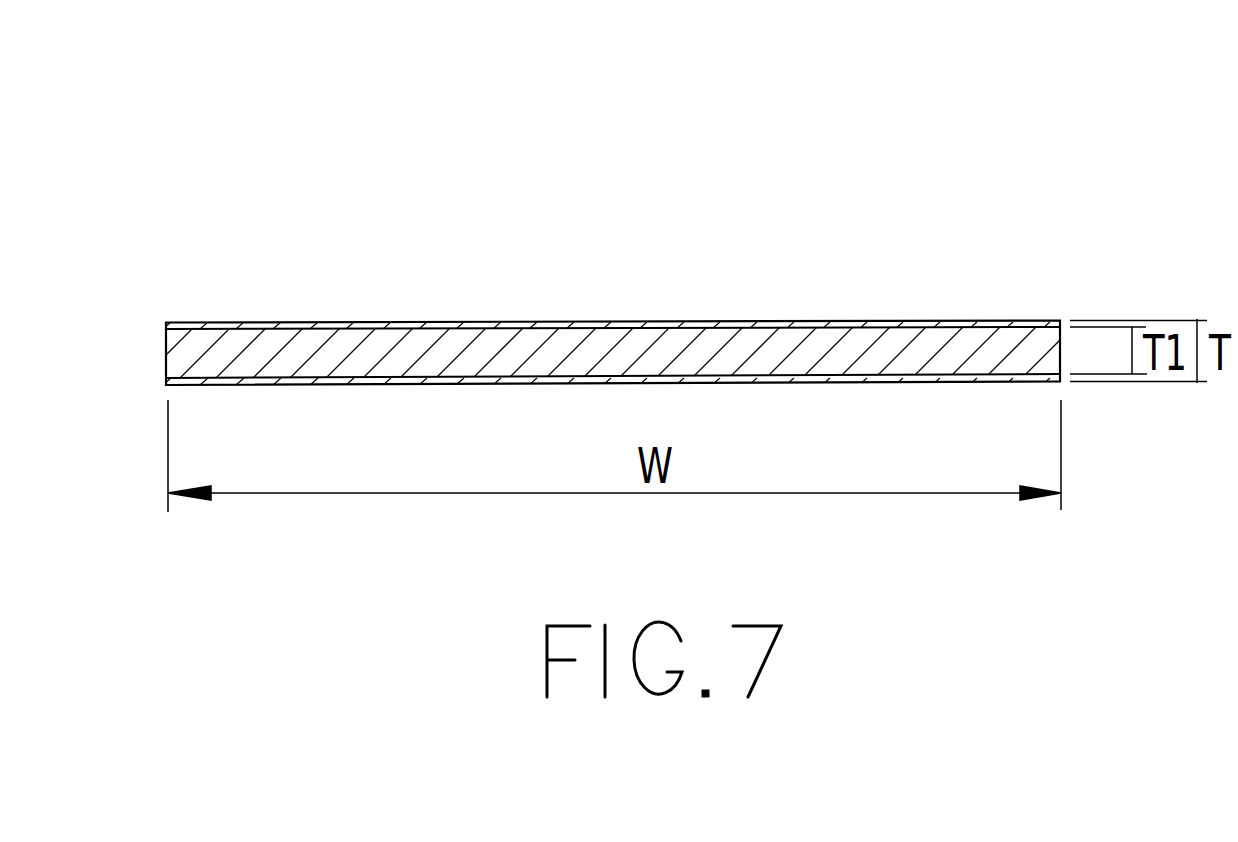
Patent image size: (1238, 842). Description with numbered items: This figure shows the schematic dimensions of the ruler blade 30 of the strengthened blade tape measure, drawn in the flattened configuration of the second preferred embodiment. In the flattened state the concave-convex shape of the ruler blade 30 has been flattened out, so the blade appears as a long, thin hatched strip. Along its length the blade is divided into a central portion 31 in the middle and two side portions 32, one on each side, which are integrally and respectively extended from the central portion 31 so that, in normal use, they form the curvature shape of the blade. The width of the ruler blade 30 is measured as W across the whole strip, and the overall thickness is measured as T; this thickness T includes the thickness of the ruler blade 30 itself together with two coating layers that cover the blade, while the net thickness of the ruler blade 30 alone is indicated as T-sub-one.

The ruler blade 30 is at (613, 208).
The central portion 31 is at (800, 308).
The side portions 32 is at (418, 308).